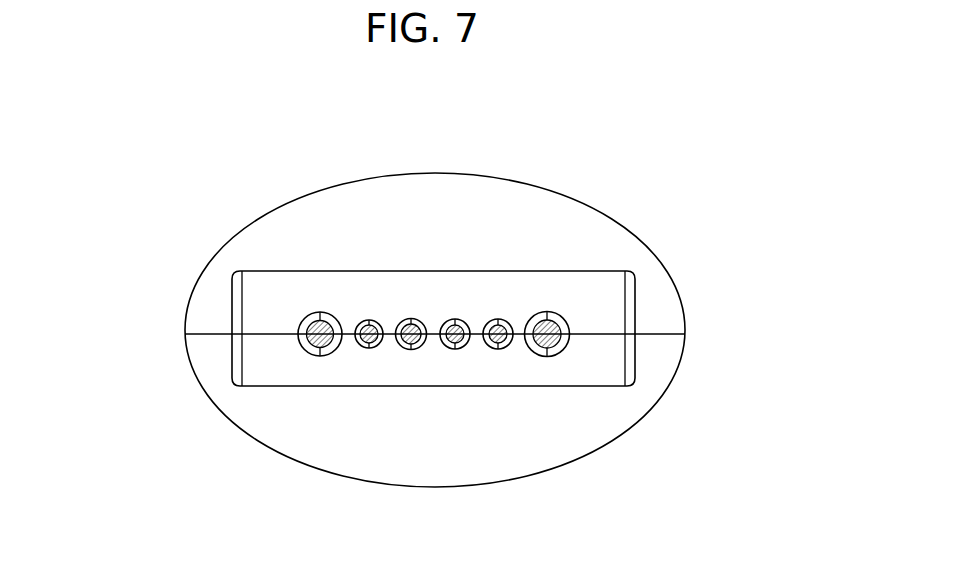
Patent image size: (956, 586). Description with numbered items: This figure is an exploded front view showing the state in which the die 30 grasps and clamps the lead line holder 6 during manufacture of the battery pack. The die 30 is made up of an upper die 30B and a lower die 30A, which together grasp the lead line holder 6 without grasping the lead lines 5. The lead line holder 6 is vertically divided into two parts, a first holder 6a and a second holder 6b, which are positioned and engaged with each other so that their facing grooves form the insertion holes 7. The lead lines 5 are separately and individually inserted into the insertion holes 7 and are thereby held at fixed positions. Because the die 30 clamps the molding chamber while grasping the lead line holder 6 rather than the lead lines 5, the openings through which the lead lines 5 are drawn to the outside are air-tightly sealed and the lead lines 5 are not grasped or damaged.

The lead line 5 is at (337, 350).
The lead line holder 6 is at (347, 332).
The first holder 6a is at (370, 376).
The second holder 6b is at (258, 300).
The insertion hole 7 is at (333, 316).
The die 30 is at (523, 330).
The lower die 30A is at (487, 408).
The upper die 30B is at (575, 223).